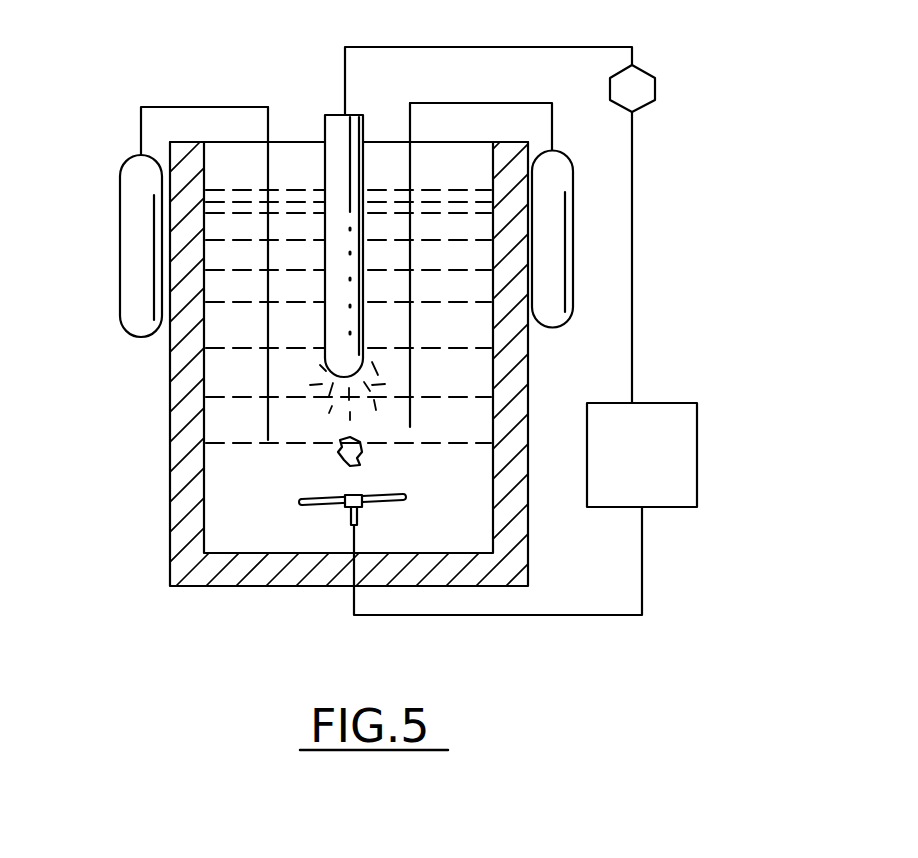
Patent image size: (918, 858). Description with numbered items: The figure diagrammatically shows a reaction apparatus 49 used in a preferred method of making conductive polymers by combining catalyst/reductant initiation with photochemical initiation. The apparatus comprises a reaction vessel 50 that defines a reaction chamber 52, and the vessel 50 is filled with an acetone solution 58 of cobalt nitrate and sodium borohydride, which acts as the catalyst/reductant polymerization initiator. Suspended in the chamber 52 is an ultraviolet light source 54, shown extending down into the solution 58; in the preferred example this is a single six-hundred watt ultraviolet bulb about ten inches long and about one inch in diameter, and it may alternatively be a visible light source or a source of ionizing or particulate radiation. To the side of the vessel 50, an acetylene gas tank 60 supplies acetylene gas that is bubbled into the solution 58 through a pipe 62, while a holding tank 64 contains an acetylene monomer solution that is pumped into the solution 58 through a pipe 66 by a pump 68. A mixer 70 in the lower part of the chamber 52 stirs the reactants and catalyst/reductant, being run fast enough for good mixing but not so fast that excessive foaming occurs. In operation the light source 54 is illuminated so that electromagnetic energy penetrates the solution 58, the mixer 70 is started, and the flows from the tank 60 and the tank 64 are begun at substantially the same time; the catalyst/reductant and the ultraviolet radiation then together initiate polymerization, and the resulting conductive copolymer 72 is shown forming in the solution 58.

The reaction apparatus 49 is at (128, 60).
The reaction vessel 50 is at (162, 458).
The reaction chamber 52 is at (397, 528).
The ultraviolet light source 54 is at (323, 125).
The acetone solution 58 is at (435, 190).
The acetylene gas tank 60 is at (120, 218).
The pipe 62 is at (268, 370).
The holding tank 64 is at (574, 222).
The pipe 66 is at (413, 373).
The pump 68 is at (656, 85).
The mixer 70 is at (300, 503).
The conductive copolymer 72 is at (336, 458).